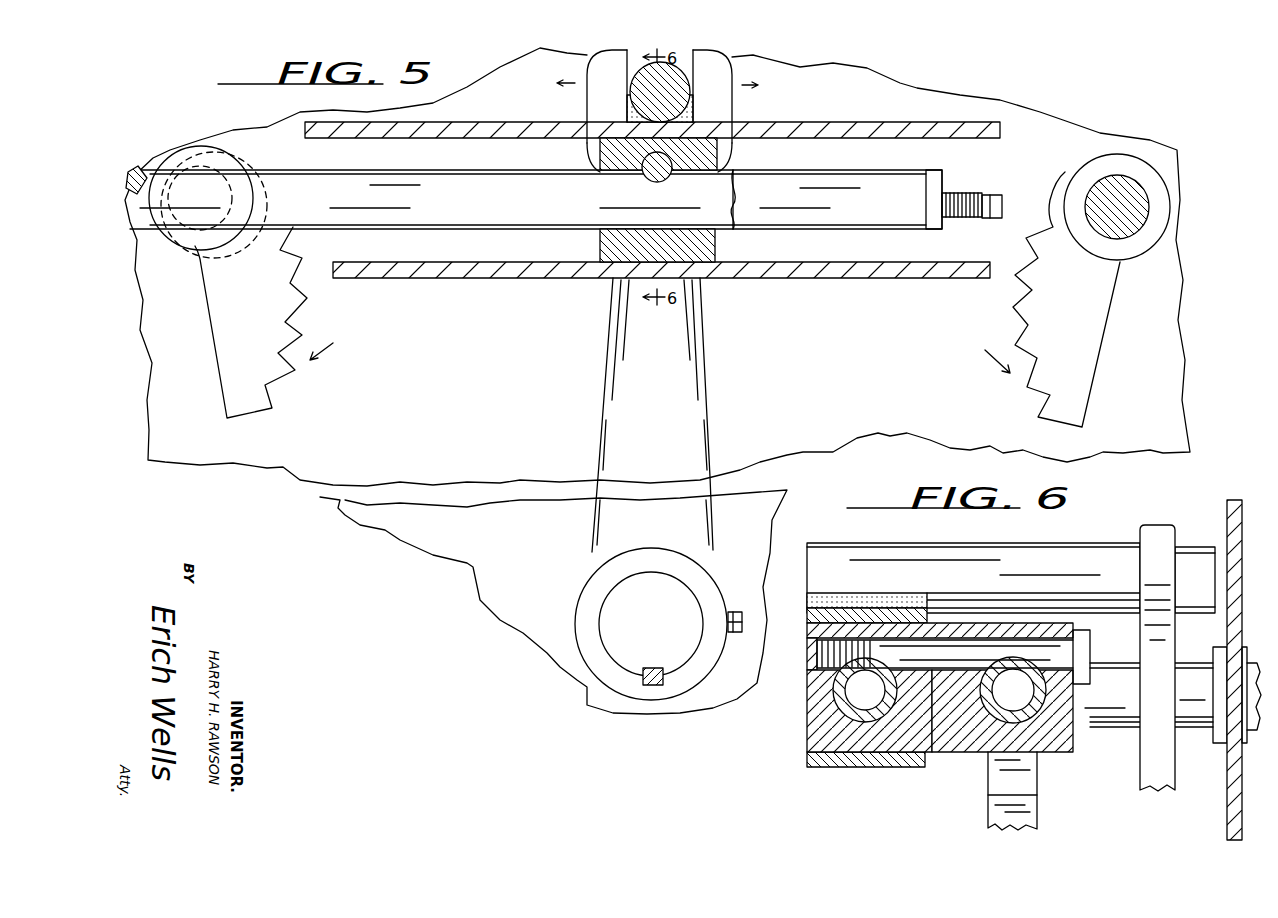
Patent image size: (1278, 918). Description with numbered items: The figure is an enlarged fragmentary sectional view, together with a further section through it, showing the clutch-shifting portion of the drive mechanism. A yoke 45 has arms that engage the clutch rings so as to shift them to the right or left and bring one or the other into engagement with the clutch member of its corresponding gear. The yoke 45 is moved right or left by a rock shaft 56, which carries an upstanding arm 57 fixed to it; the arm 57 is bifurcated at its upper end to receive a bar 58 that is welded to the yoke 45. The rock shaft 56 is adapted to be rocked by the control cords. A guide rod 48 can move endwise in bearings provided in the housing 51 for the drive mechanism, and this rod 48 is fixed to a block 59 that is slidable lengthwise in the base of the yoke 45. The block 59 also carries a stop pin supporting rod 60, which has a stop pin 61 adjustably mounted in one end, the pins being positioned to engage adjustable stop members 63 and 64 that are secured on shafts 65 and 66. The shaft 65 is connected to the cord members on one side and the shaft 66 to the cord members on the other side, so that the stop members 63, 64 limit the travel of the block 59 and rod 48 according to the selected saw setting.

In FIG. 5, the yoke 45 is at (492, 123).
In FIG. 6, the yoke 45 is at (807, 620).
In FIG. 5, the guide rod 48 is at (476, 218).
In FIG. 6, the guide rod 48 is at (840, 695).
In FIG. 6, the housing 51 is at (1233, 500).
In FIG. 5, the rock shaft 56 is at (618, 610).
In FIG. 5, the upstanding arm 57 is at (614, 385).
In FIG. 6, the upstanding arm 57 is at (1155, 787).
In FIG. 5, the bar 58 is at (637, 83).
In FIG. 6, the bar 58 is at (1068, 557).
In FIG. 5, the block 59 is at (610, 262).
In FIG. 6, the block 59 is at (812, 740).
In FIG. 5, the stop pin supporting rod 60 is at (855, 215).
In FIG. 6, the stop pin supporting rod 60 is at (987, 713).
In FIG. 5, the stop pin 61 is at (962, 193).
In FIG. 5, the adjustable stop member 63 is at (1090, 318).
In FIG. 5, the adjustable stop member 64 is at (215, 283).
In FIG. 6, the adjustable stop member 64 is at (988, 807).
In FIG. 5, the shaft 65 is at (1120, 210).
In FIG. 5, the shaft 66 is at (208, 209).
In FIG. 6, the shaft 66 is at (1121, 713).